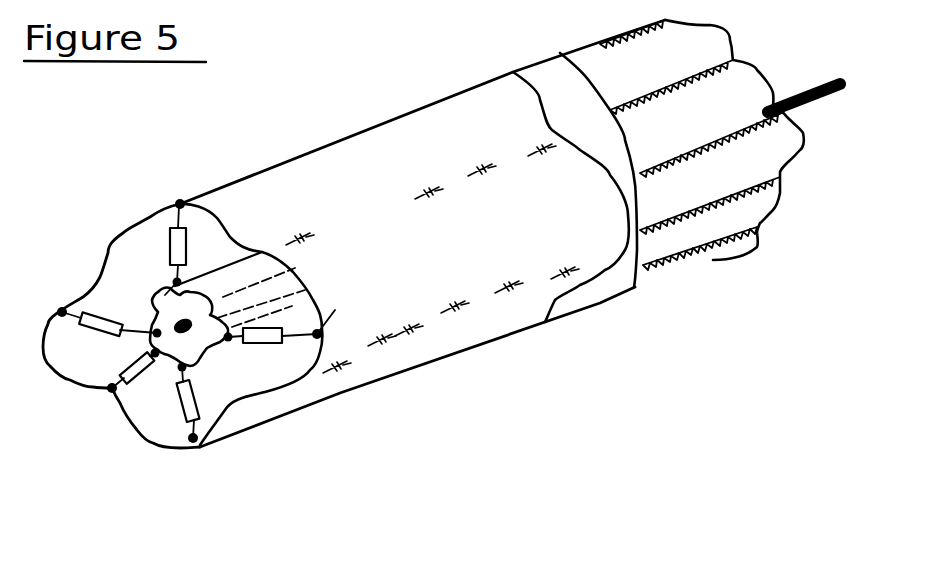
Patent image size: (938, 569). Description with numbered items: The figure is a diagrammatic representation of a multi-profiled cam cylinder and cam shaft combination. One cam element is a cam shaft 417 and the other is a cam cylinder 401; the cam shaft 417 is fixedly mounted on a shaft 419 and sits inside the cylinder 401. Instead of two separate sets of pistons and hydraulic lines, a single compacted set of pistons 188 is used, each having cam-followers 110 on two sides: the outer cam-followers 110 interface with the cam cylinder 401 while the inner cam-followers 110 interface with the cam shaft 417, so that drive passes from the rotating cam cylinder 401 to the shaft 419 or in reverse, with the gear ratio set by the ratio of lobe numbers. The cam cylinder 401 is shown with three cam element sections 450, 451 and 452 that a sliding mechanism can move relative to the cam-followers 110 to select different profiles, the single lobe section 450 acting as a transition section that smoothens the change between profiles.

The cam cylinder 401 is at (491, 307).
The cam element section 451 is at (421, 346).
The single lobe section 450 is at (610, 290).
The cam element section 452 is at (713, 250).
The cam shaft 417 is at (182, 366).
The shaft 419 is at (178, 322).
The pistons 188 is at (168, 232).
The cam-followers 110 is at (184, 202).